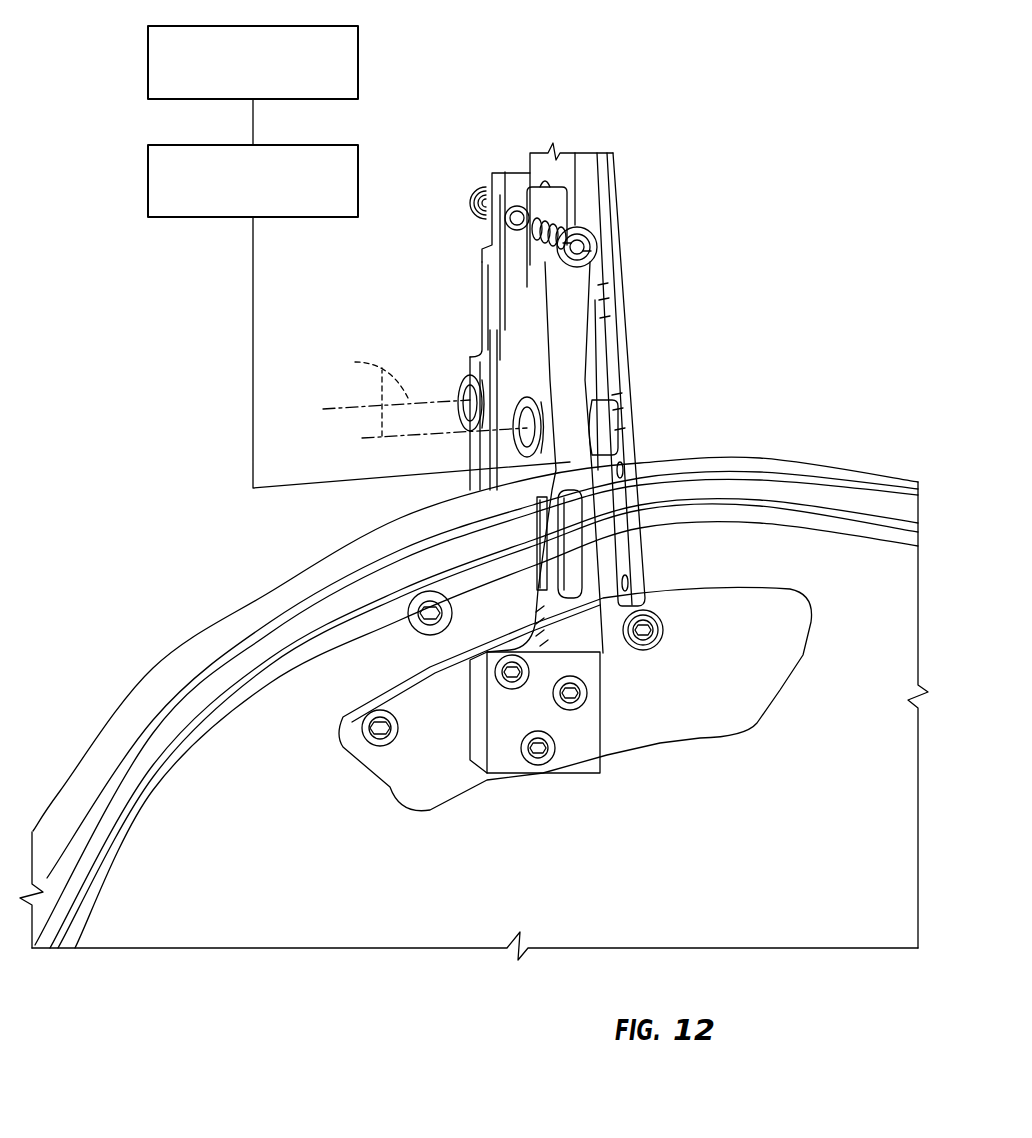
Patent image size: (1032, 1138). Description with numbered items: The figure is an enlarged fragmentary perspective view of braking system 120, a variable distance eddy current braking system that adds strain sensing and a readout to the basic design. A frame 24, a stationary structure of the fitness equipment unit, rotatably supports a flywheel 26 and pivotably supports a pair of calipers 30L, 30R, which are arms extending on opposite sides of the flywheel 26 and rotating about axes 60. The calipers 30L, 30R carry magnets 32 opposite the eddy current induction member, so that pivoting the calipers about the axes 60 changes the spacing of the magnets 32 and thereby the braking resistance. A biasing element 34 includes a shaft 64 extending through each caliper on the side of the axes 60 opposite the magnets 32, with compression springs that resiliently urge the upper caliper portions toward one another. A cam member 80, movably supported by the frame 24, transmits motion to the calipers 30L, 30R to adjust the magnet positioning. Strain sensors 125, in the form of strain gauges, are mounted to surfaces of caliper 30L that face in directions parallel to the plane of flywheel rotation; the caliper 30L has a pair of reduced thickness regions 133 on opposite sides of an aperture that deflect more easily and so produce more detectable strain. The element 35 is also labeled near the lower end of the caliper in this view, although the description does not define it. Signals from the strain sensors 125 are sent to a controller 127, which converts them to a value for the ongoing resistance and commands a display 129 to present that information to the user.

The display 129 is at (358, 60).
The controller 127 is at (358, 178).
The braking system 120 is at (778, 119).
The flywheel 26 is at (860, 477).
The magnets 32 is at (393, 788).
The clamp block 35 is at (577, 593).
The cam member 80 is at (590, 153).
The frame 24 is at (615, 268).
The caliper 30L is at (570, 382).
The caliper 30R is at (482, 317).
The biasing element 34 is at (592, 240).
The shaft 64 is at (512, 193).
The axes 60 is at (431, 401).
The strain sensors 125 is at (593, 527).
The reduced thickness regions 133 is at (625, 562).